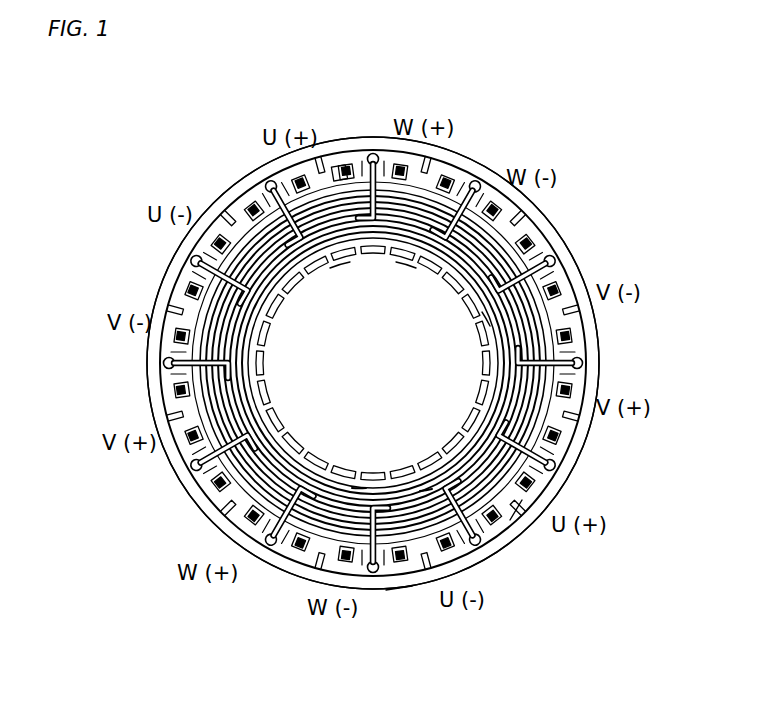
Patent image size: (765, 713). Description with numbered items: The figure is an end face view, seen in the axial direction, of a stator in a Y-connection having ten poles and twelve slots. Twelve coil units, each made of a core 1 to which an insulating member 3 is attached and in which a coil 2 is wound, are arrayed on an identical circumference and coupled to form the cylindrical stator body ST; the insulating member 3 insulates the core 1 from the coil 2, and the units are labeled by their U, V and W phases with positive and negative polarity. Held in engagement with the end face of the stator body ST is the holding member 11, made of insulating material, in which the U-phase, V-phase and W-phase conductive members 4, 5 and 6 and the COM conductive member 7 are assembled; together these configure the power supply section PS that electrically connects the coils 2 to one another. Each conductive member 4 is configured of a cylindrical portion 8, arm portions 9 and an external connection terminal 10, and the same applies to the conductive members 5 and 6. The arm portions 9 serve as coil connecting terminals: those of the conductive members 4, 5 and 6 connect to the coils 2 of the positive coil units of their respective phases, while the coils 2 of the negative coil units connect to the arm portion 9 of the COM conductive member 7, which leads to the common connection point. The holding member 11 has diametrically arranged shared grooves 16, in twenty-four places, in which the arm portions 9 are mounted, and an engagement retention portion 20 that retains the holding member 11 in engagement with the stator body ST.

The stator body ST is at (256, 112).
The core 1 is at (455, 145).
The coil 2 is at (336, 176).
The insulating member 3 is at (350, 172).
The conductive member 4 is at (552, 438).
The conductive member 5 is at (470, 436).
The conductive member 6 is at (295, 458).
The COM conductive member 7 is at (400, 590).
The cylindrical portion 8 is at (352, 487).
The arm portion 9 is at (372, 158).
The external connection terminal 10 is at (262, 215).
The holding member 11 is at (560, 216).
The shared groove 16 is at (245, 358).
The engagement retention portion 20 is at (520, 520).
The power supply section PS is at (486, 316).